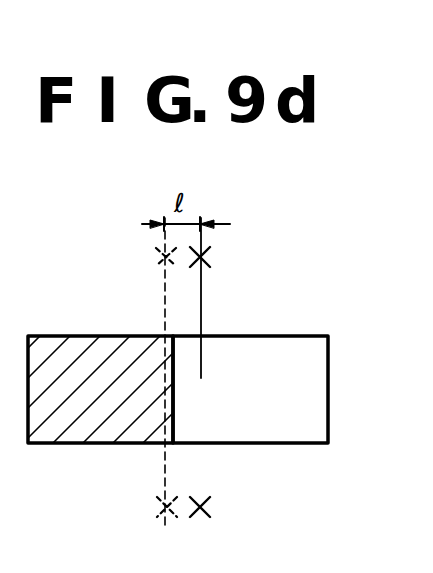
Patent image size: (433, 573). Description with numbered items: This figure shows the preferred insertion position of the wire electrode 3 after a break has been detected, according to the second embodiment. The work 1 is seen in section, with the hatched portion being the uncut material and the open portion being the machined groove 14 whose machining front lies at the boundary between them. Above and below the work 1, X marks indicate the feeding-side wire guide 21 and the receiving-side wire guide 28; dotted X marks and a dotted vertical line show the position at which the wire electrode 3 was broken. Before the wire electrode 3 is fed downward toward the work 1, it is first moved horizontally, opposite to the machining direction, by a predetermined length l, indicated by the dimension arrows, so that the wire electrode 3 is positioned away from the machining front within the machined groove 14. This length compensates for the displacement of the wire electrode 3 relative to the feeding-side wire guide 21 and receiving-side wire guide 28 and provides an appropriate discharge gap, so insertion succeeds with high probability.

The work 1 is at (73, 441).
The machined groove 14 is at (271, 441).
The wire electrode 3 is at (203, 303).
The feeding-side wire guide 21 is at (209, 256).
The receiving-side wire guide 28 is at (207, 508).